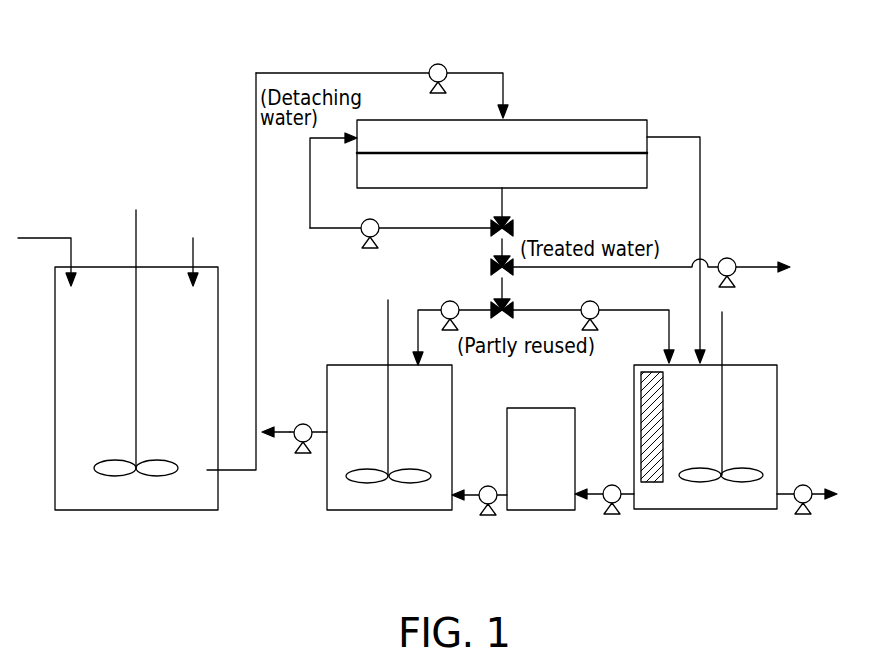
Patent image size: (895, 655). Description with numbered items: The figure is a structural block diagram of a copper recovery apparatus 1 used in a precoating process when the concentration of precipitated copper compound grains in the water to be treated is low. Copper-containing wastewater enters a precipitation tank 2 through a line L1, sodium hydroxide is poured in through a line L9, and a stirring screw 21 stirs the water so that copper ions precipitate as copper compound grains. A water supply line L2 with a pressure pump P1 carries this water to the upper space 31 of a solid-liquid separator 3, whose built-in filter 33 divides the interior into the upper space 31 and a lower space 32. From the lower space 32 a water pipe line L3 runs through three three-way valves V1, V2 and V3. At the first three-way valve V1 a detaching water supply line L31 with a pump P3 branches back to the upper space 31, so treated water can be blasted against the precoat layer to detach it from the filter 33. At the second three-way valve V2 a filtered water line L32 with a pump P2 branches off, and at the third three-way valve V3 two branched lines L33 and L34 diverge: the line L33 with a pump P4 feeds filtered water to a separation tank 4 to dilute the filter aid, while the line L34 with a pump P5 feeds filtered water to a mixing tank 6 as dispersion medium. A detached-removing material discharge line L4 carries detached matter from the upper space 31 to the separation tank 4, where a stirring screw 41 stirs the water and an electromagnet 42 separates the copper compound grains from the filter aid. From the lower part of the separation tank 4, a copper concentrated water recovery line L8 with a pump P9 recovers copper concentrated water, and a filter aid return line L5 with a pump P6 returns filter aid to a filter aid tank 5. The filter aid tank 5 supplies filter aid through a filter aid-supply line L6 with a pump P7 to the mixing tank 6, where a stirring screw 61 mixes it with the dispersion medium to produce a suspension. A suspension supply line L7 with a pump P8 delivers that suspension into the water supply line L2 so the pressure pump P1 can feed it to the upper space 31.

The copper recovery apparatus 1 is at (597, 31).
The precipitation tank 2 is at (148, 512).
The stirring screw 21 is at (105, 477).
The solid-liquid separator 3 is at (547, 118).
The upper space 31 is at (590, 133).
The lower space 32 is at (626, 178).
The filter 33 is at (633, 152).
The separation tank 4 is at (718, 511).
The stirring screw 41 is at (686, 483).
The electromagnet 42 is at (648, 483).
The filter aid tank 5 is at (538, 512).
The mixing tank 6 is at (386, 512).
The stirring screw 61 is at (356, 485).
The line L1 is at (73, 247).
The water supply line L2 is at (390, 72).
The water pipe line L3 is at (500, 207).
The detaching water supply line L31 is at (318, 233).
The filtered water line L32 is at (666, 270).
The branched line L33 is at (667, 343).
The branched line L34 is at (418, 340).
The detached-removing material discharge line L4 is at (701, 178).
The filter aid return line L5 is at (592, 498).
The filter aid-supply line L6 is at (465, 498).
The suspension supply line L7 is at (283, 438).
The copper concentrated water recovery line L8 is at (787, 490).
The line L9 is at (196, 247).
The pressure pump P1 is at (438, 64).
The pump P2 is at (727, 257).
The pump P3 is at (375, 220).
The pump P4 is at (594, 302).
The pump P5 is at (447, 301).
The pump P6 is at (612, 485).
The pump P7 is at (488, 485).
The pump P8 is at (304, 423).
The pump P9 is at (808, 485).
The first three-way valve V1 is at (514, 222).
The second three-way valve V2 is at (493, 262).
The third three-way valve V3 is at (514, 305).